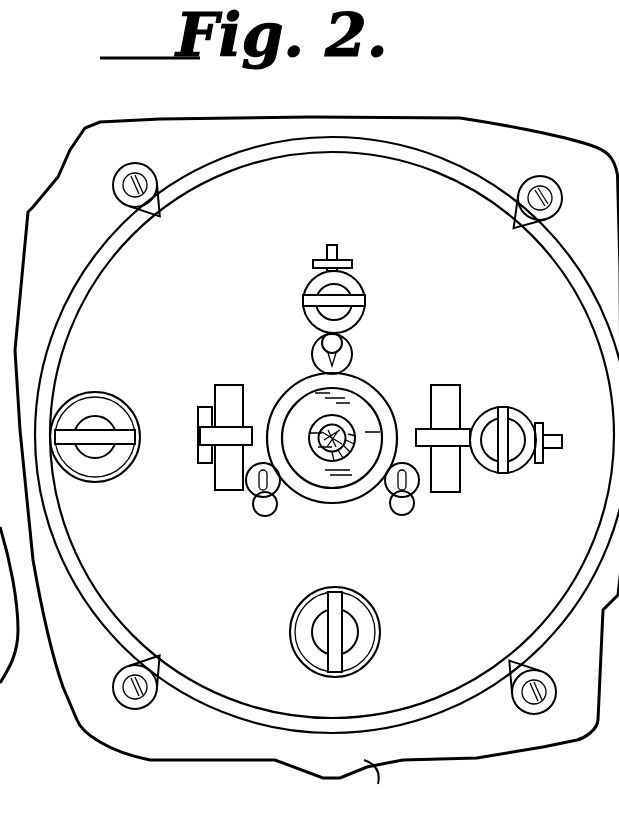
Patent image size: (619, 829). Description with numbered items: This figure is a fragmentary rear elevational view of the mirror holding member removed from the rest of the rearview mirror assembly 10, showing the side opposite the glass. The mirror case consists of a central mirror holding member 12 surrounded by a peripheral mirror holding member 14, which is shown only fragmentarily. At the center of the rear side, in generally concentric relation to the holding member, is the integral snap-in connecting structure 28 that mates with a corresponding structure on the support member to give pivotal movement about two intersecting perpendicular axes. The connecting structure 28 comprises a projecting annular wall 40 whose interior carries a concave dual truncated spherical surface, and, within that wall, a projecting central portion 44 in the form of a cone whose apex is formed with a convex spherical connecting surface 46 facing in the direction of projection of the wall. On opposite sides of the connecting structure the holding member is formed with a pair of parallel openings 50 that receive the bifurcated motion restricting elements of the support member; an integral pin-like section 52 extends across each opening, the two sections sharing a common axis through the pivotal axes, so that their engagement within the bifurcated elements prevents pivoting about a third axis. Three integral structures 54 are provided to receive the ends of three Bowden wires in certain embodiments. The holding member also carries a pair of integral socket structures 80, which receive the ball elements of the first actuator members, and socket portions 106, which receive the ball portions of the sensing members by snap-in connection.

The rearview mirror assembly 10 is at (617, 88).
The central mirror holding member 12 is at (257, 694).
The peripheral mirror holding member 14 is at (384, 790).
The integral connecting structure 28 is at (357, 497).
The projecting annular wall 40 is at (380, 384).
The projecting central portion 44 is at (318, 427).
The second convex connecting surface 46 is at (320, 456).
The parallel openings 50 is at (222, 477).
The pin-like sections 52 is at (207, 437).
The integral structures 54 is at (352, 348).
The socket structures 80 is at (100, 468).
The socket portion 106 is at (354, 284).